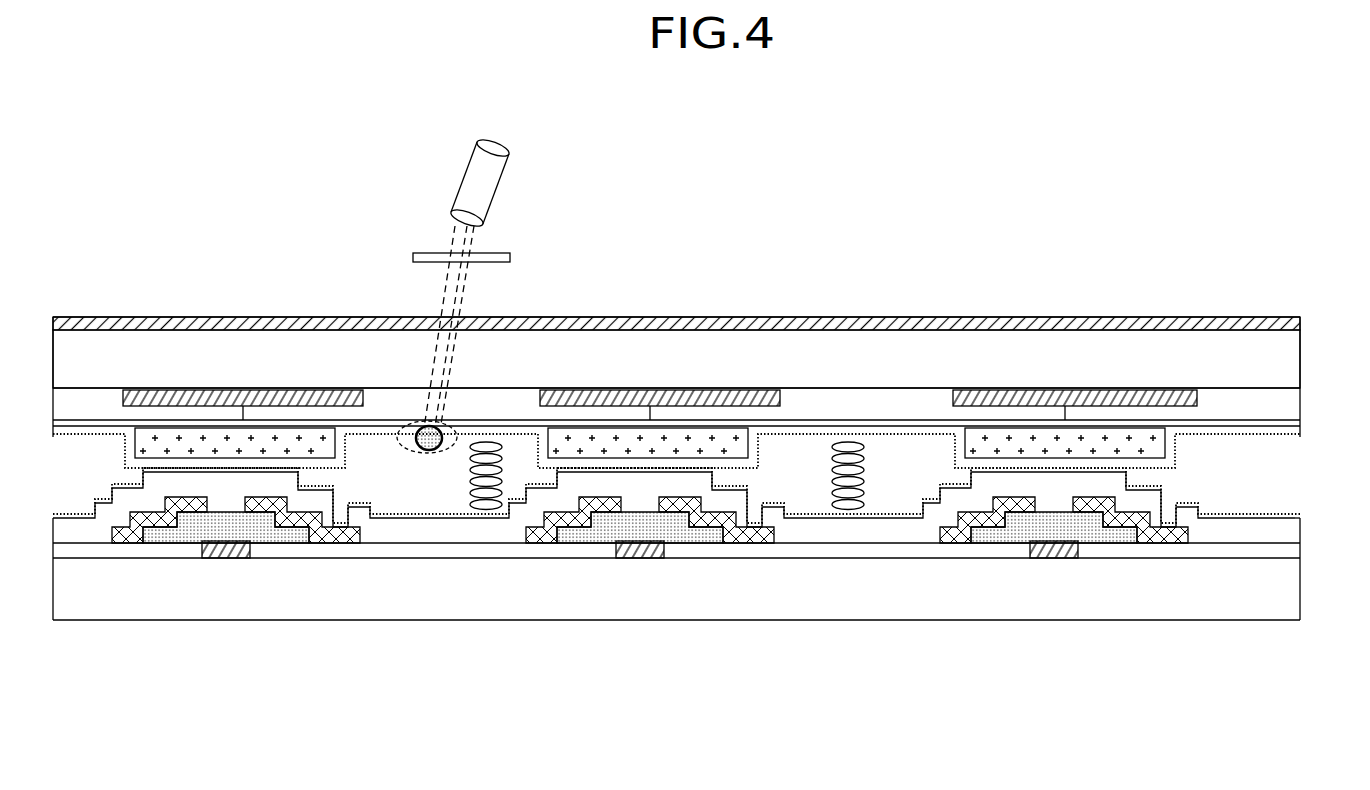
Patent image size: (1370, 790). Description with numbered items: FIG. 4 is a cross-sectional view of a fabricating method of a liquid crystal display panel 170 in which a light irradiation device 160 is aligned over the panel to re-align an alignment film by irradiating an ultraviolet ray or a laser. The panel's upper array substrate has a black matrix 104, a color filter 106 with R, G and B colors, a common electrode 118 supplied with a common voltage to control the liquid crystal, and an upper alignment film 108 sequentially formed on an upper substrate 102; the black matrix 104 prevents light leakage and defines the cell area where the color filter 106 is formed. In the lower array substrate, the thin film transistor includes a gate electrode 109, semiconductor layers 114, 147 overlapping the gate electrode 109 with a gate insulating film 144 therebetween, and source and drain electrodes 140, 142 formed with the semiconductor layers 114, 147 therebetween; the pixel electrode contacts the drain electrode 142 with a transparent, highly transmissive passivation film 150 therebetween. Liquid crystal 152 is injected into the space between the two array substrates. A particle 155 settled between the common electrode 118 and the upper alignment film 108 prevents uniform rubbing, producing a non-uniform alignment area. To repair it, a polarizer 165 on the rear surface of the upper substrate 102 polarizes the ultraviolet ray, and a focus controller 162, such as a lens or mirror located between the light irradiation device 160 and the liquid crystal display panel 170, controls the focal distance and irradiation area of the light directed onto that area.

The upper substrate 102 is at (1302, 351).
The black matrix 104 is at (676, 388).
The color filter 106 is at (1302, 397).
The upper alignment film 108 is at (1302, 437).
The gate electrode 109 is at (232, 560).
The semiconductor layer 114 is at (151, 543).
The common electrode 118 is at (1302, 426).
The source electrode 140 is at (190, 528).
The drain electrode 142 is at (301, 535).
The gate insulating film 144 is at (503, 548).
The semiconductor layer 147 is at (287, 511).
The passivation film 150 is at (380, 537).
The liquid crystal 152 is at (866, 457).
The particle 155 is at (421, 421).
The light irradiation device 160 is at (504, 154).
The focus controller 162 is at (512, 258).
The polarizer 165 is at (1302, 321).
The liquid crystal display panel 170 is at (1062, 259).